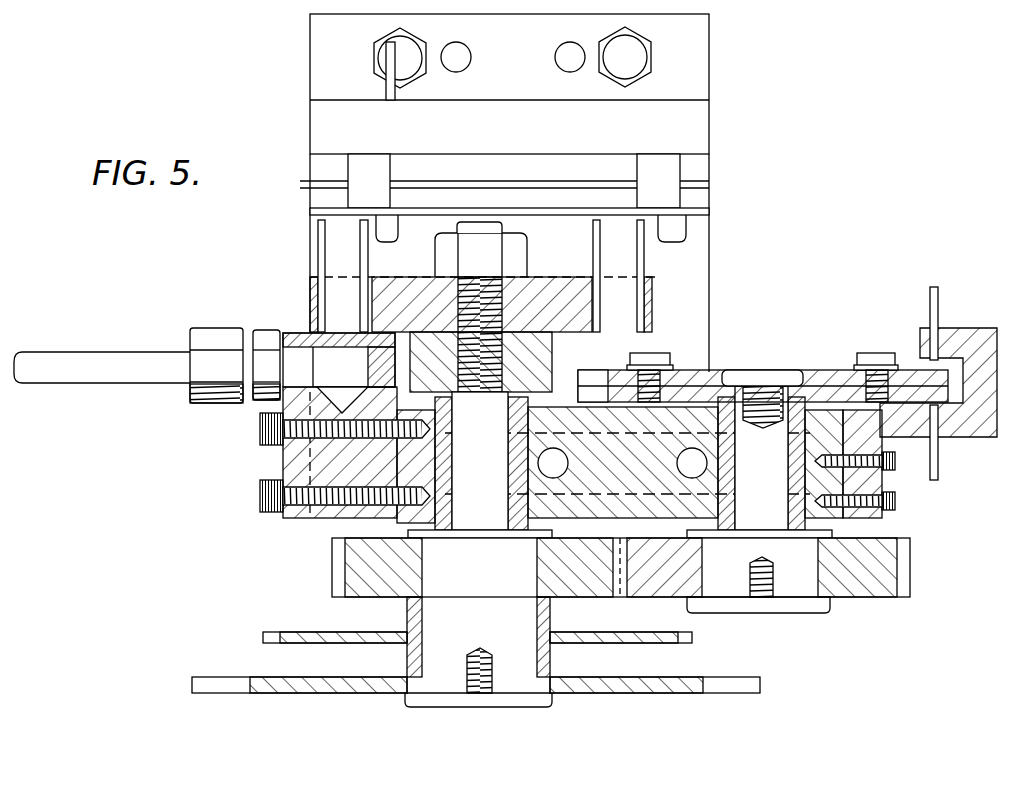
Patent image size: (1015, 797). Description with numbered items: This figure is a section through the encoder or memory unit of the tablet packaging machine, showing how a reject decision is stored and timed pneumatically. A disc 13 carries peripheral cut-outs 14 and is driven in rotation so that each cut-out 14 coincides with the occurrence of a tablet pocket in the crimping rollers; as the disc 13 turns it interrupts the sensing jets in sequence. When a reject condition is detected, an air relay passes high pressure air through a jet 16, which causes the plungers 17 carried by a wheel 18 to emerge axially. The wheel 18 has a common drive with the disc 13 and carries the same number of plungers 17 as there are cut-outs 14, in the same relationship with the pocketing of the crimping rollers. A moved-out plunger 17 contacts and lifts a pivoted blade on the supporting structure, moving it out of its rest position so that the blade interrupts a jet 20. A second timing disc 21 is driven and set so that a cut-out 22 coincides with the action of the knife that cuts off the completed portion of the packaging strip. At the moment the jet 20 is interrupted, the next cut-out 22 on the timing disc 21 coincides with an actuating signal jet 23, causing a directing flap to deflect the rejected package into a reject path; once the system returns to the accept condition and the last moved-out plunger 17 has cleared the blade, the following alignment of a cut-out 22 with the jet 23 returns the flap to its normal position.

The disc 13 is at (659, 682).
The peripheral cut-outs 14 is at (734, 685).
The jet 16 is at (222, 329).
The plungers 17 is at (615, 262).
The wheel 18 is at (560, 283).
The jet 20 is at (386, 85).
The second timing disc 21 is at (818, 372).
The cut-out 22 is at (928, 378).
The actuating signal jet 23 is at (930, 294).